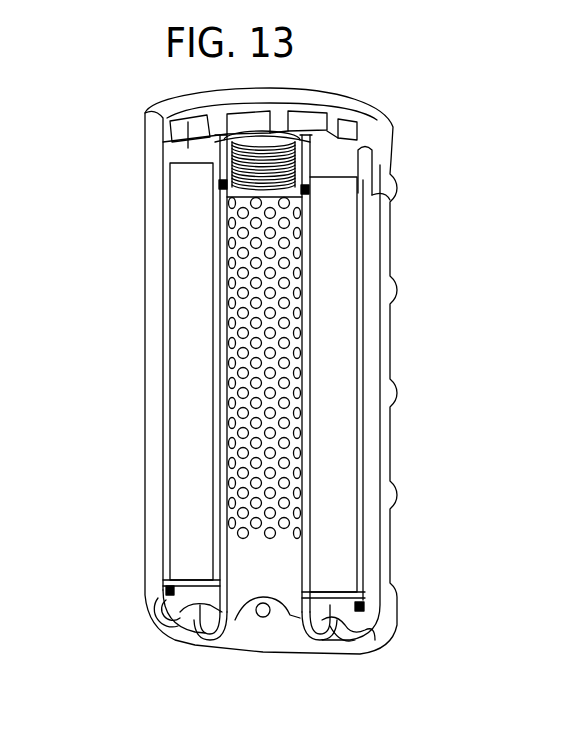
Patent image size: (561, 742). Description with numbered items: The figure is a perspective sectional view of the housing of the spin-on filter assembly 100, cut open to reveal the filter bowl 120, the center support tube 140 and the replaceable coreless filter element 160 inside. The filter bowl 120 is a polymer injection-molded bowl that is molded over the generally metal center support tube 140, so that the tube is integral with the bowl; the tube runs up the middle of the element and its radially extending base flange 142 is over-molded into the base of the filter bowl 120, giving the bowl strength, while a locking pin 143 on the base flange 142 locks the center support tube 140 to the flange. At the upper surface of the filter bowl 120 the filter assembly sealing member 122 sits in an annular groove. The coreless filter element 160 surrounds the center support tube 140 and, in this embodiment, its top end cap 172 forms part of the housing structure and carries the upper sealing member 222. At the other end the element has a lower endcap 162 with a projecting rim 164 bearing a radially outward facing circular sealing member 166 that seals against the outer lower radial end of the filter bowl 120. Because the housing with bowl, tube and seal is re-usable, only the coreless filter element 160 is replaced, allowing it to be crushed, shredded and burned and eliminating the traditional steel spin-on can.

The spin-on filter assembly 100 is at (66, 308).
The filter bowl 120 is at (385, 536).
The sealing member 122 is at (370, 163).
The center support tube 140 is at (303, 560).
The base flange 142 is at (184, 615).
The locking pin 143 is at (266, 620).
The coreless filter element 160 is at (188, 408).
The lower endcap 162 is at (193, 577).
The projecting rim 164 is at (178, 603).
The circular sealing member 166 is at (166, 592).
The top end cap 172 is at (188, 148).
The upper sealing member 222 is at (330, 98).